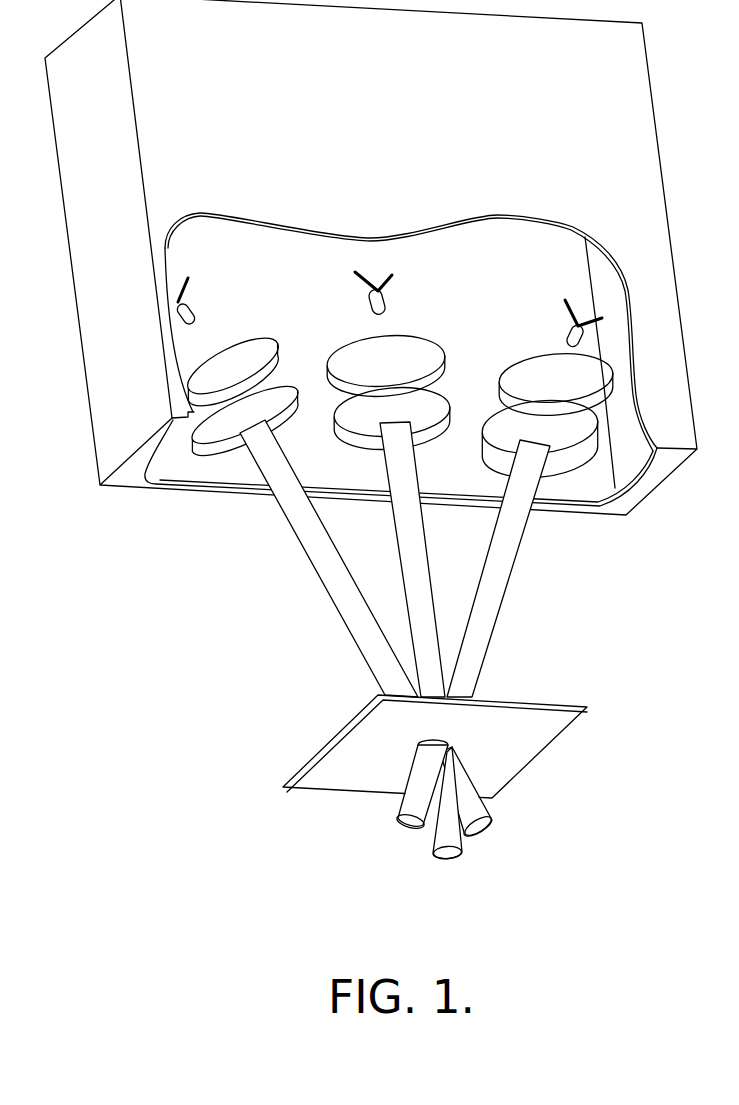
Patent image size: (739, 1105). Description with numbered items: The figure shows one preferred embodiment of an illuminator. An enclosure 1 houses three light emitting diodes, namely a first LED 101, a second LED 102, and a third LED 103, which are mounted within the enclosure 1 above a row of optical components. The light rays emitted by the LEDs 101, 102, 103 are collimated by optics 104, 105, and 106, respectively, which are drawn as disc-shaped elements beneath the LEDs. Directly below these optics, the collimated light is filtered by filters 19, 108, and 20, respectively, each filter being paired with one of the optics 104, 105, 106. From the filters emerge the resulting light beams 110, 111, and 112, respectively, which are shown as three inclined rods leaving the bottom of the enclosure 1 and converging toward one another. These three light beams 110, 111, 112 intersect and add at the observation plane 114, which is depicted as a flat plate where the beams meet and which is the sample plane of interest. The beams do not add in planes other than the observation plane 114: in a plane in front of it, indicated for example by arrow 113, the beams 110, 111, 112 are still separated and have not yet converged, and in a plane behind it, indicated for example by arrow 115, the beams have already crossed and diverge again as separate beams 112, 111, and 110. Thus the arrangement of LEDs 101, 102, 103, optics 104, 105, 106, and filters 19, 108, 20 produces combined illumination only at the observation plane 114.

The enclosure 1 is at (192, 72).
The light emitting diode 101 is at (198, 302).
The light emitting diode 102 is at (391, 294).
The light emitting diode 103 is at (562, 330).
The optic 104 is at (236, 394).
The optic 105 is at (398, 380).
The optic 106 is at (570, 396).
The filter 19 is at (289, 423).
The filter 108 is at (453, 398).
The filter 20 is at (491, 456).
The light beam 110 is at (290, 532).
The light beam 111 is at (392, 562).
The light beam 112 is at (529, 551).
The plane in front of the sample plane 113 is at (250, 659).
The observation plane 114 is at (252, 745).
The plane behind the sample plane 115 is at (252, 829).